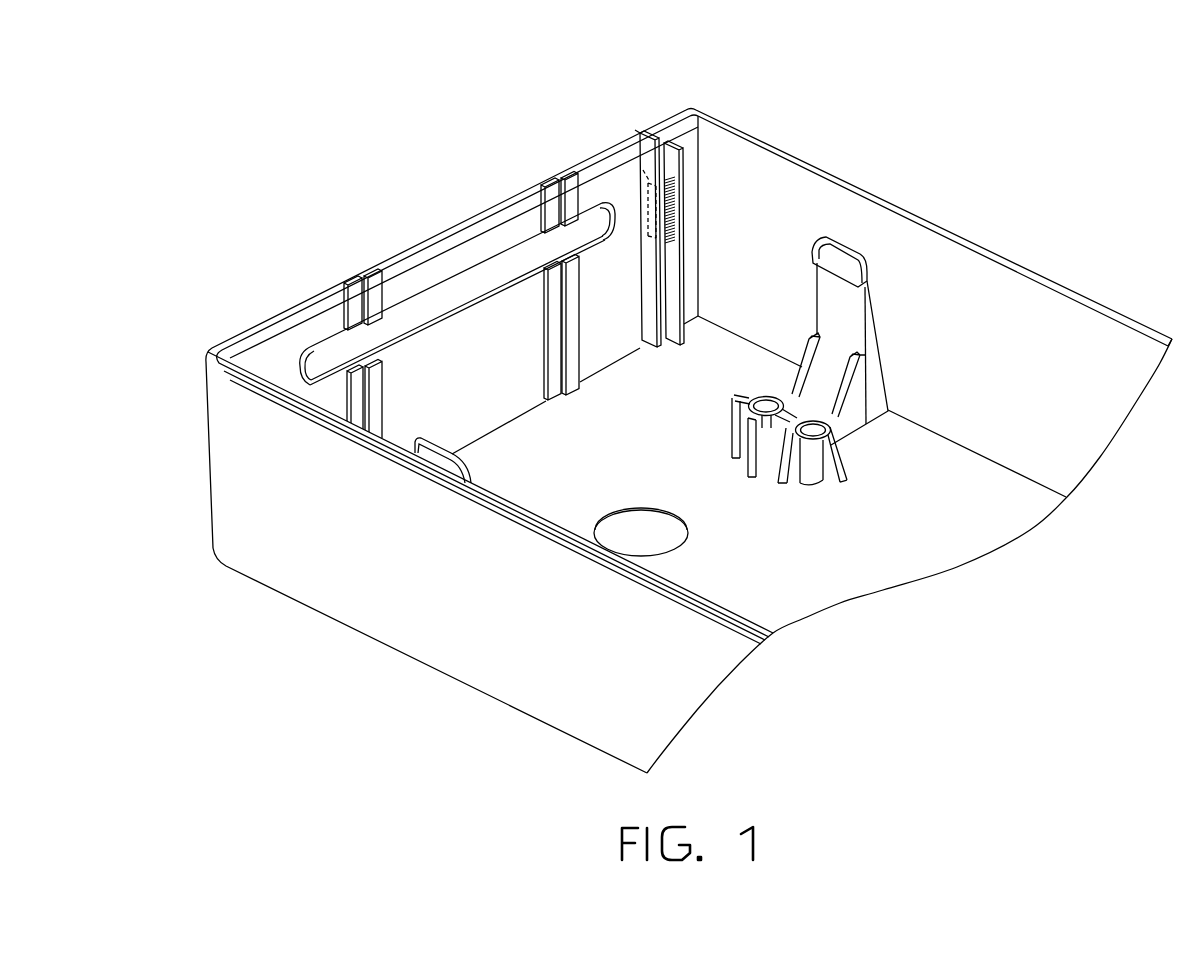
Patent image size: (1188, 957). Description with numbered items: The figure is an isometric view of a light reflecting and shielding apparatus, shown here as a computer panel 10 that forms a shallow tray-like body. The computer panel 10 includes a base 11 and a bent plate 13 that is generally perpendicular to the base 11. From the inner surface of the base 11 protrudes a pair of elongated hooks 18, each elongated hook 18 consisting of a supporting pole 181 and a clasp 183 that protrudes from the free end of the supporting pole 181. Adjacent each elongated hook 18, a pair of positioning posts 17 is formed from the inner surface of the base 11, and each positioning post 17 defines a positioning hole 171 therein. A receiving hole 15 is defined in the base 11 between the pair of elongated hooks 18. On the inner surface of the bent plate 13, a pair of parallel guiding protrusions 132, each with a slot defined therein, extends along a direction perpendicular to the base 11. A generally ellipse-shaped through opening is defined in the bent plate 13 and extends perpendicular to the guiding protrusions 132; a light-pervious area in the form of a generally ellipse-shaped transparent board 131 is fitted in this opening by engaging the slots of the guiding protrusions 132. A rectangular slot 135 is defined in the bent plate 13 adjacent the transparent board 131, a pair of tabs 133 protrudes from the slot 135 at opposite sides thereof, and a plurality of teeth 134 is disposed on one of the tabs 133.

The computer panel 10 is at (1082, 283).
The base 11 is at (922, 545).
The bent plate 13 is at (413, 273).
The transparent board 131 is at (507, 267).
The guiding protrusions 132 is at (350, 307).
The tabs 133 is at (658, 127).
The teeth 134 is at (673, 197).
The rectangular slot 135 is at (637, 153).
The receiving hole 15 is at (648, 538).
The positioning posts 17 is at (898, 494).
The positioning hole 171 is at (815, 430).
The elongated hooks 18 is at (914, 277).
The supporting pole 181 is at (870, 327).
The clasp 183 is at (832, 255).